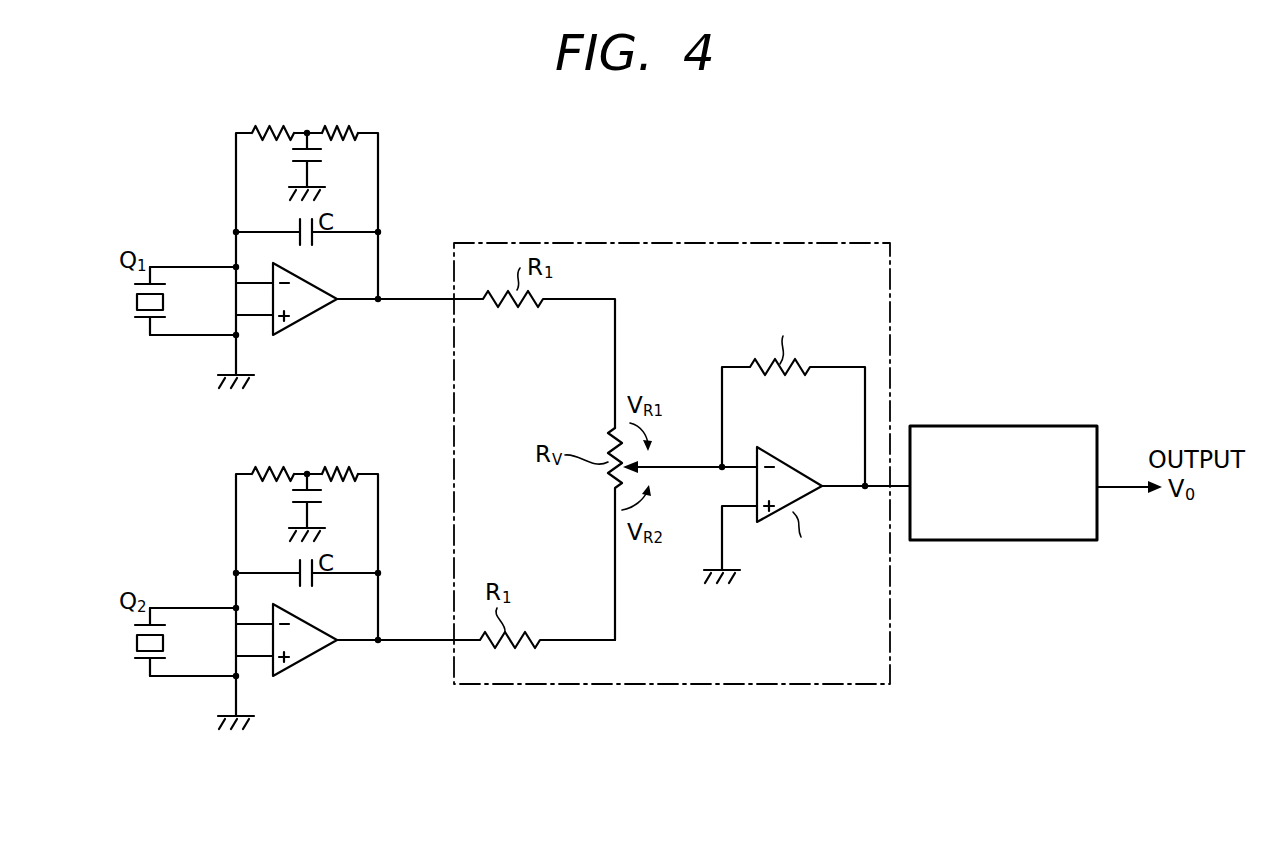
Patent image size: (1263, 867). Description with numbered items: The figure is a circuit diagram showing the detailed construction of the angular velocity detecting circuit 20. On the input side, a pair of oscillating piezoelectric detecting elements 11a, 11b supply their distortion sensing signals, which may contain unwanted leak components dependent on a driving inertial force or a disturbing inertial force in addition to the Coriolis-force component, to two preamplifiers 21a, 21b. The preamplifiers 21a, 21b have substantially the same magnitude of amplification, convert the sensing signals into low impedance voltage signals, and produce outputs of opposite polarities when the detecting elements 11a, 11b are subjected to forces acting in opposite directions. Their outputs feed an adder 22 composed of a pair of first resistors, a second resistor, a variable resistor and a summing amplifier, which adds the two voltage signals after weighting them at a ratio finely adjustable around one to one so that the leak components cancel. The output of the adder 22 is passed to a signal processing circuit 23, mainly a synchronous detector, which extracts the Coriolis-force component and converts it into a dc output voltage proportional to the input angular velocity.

The detecting circuit 20 is at (617, 224).
The adder 22 is at (893, 296).
The signal processing circuit 23 is at (936, 425).
The preamplifier 21a is at (321, 331).
The preamplifier 21b is at (321, 672).
The detecting element 11a is at (133, 298).
The detecting element 11b is at (133, 639).